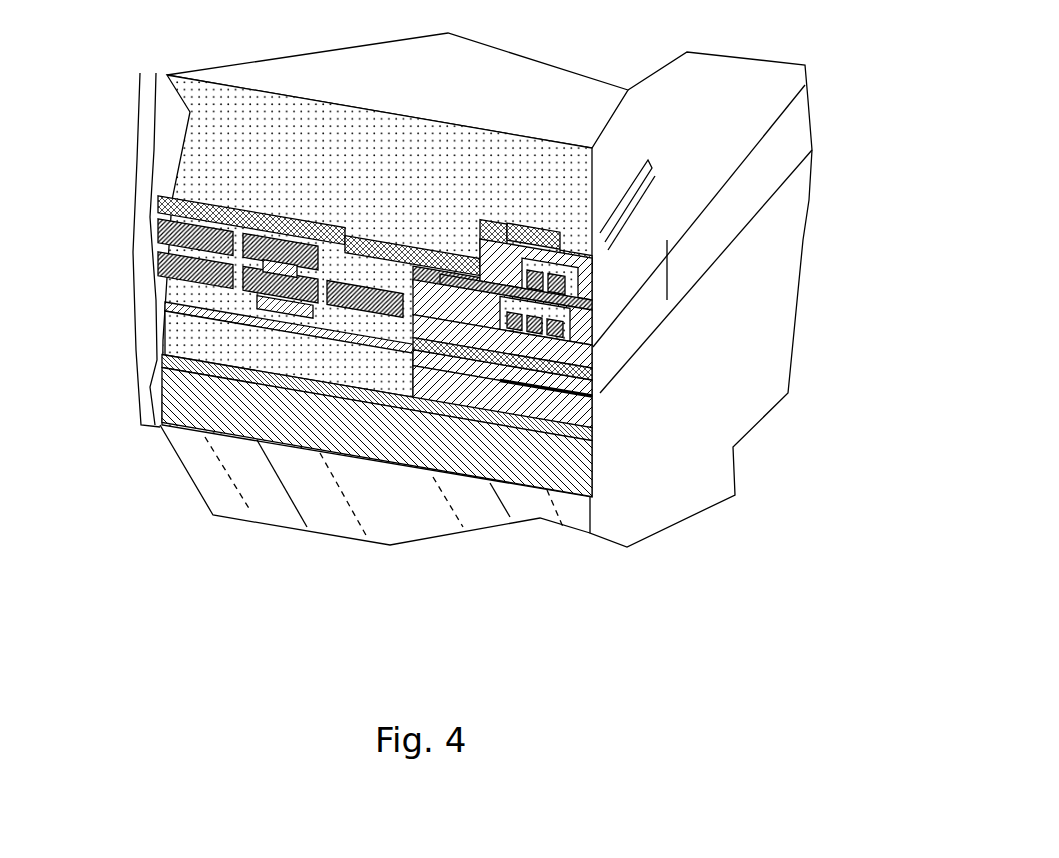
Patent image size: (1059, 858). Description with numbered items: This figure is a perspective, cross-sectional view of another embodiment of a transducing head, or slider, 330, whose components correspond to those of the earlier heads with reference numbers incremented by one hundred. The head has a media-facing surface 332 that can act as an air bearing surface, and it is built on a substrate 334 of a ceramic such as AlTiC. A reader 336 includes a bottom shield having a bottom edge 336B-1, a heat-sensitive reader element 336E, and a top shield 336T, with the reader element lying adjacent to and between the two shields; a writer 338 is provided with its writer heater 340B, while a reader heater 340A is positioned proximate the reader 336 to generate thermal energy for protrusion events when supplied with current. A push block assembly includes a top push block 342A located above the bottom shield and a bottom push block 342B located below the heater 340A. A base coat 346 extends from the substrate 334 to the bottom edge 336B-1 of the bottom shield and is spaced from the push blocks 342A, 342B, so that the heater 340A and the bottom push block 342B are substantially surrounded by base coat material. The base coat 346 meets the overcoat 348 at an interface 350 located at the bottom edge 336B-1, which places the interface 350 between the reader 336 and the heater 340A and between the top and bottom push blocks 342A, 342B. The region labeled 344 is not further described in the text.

The transducing head 330 is at (600, 50).
The media-facing surface 332 is at (670, 466).
The substrate 334 is at (257, 497).
The reader 336 is at (612, 380).
The top shield 336T is at (593, 347).
The reader element 336E is at (608, 375).
The bottom edge of the bottom shield 336B-1 is at (590, 498).
The writer 338 is at (622, 268).
The heater 340A is at (413, 380).
The writer heater 340B is at (367, 107).
The top push block 342A is at (367, 107).
The bottom push block 342B is at (308, 392).
The interconnect layer 344 is at (273, 250).
The base coat 346 is at (331, 432).
The overcoat 348 is at (329, 231).
The interface 350 is at (217, 513).